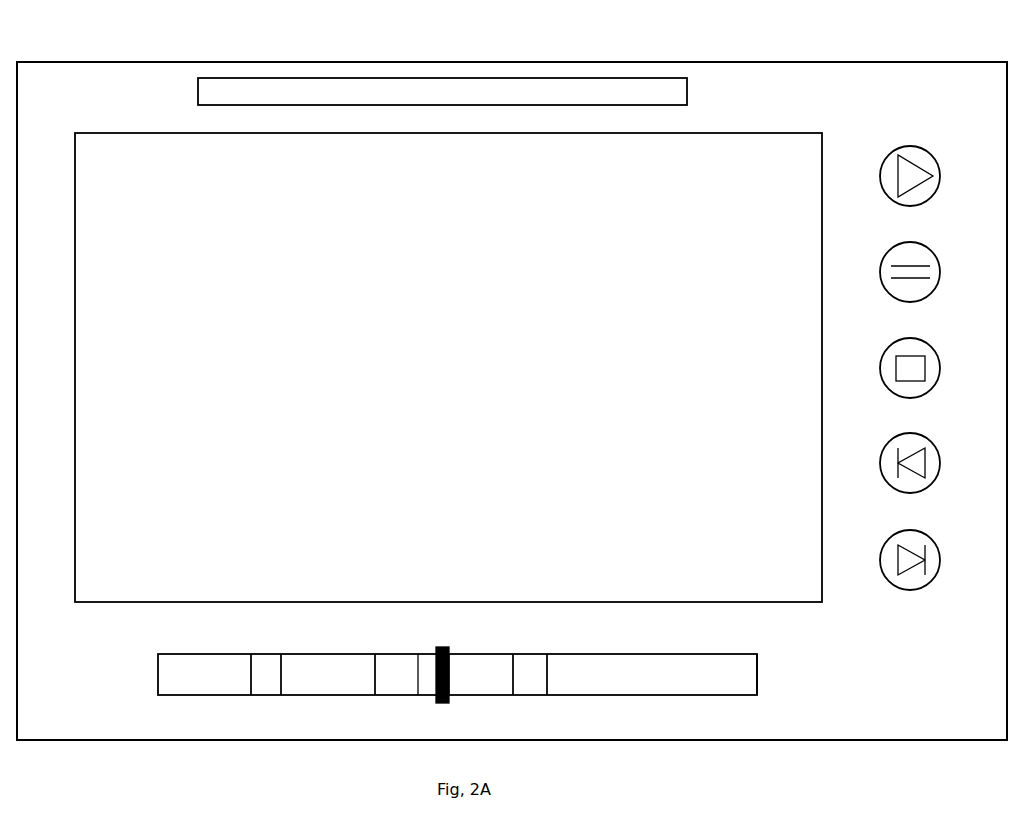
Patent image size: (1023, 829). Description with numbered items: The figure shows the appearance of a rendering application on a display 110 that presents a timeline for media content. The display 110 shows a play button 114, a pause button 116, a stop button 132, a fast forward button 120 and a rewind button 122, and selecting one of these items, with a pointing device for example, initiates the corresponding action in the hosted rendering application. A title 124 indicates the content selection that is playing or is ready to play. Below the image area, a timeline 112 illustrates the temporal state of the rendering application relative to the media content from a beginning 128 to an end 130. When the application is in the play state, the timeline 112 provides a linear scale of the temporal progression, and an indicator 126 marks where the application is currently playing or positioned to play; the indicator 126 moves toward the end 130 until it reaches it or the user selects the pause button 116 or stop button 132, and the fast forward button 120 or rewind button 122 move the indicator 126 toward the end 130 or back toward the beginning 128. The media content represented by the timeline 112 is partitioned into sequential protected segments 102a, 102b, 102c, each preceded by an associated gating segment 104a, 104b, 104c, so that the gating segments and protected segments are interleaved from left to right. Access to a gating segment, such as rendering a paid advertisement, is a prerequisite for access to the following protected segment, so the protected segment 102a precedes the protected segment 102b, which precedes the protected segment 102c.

The display 110 is at (891, 62).
The title 124 is at (687, 90).
The play button 114 is at (938, 180).
The pause button 116 is at (938, 276).
The stop button 132 is at (938, 372).
The rewind button 122 is at (938, 467).
The fast forward button 120 is at (938, 564).
The timeline 112 is at (640, 696).
The beginning 128 is at (157, 689).
The end 130 is at (757, 671).
The gating segment 104a is at (271, 654).
The protected segment 102a is at (342, 654).
The gating segment 104b is at (402, 654).
The protected segment 102b is at (481, 654).
The gating segment 104c is at (548, 654).
The protected segment 102c is at (672, 654).
The indicator 126 is at (447, 703).